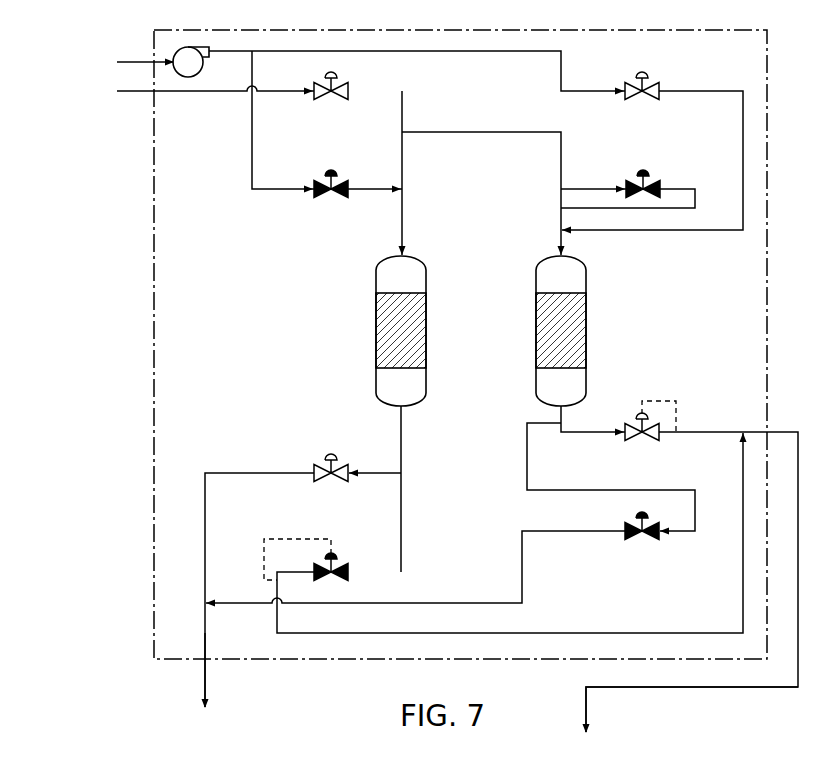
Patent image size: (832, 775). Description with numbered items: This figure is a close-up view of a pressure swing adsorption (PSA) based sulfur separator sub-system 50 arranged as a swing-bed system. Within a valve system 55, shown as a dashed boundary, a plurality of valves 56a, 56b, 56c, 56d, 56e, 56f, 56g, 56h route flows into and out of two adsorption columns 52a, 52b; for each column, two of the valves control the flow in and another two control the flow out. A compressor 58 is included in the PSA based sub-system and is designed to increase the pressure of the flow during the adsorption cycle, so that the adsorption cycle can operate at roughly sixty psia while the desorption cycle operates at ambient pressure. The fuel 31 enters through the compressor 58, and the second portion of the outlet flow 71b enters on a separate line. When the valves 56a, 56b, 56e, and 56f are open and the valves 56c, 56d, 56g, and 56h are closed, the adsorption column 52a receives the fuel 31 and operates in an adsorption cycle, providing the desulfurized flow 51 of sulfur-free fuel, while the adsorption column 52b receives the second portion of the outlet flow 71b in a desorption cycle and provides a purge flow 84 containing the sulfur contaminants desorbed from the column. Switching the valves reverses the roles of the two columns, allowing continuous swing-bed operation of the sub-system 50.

The sulfur separator sub-system 50 is at (83, 161).
The valve system 55 is at (154, 250).
The compressor 58 is at (174, 52).
The fuel 31 is at (133, 64).
The second portion of the outlet flow 71b is at (134, 98).
The valve 56e is at (324, 98).
The valve 56f is at (636, 98).
The valve 56g is at (324, 196).
The valve 56h is at (640, 172).
The valve 56a is at (324, 481).
The valve 56b is at (630, 424).
The valve 56c is at (339, 566).
The valve 56d is at (638, 541).
The adsorption column 52a is at (543, 320).
The adsorption column 52b is at (418, 343).
The purge flow 84 is at (203, 673).
The desulfurized flow 51 is at (586, 701).